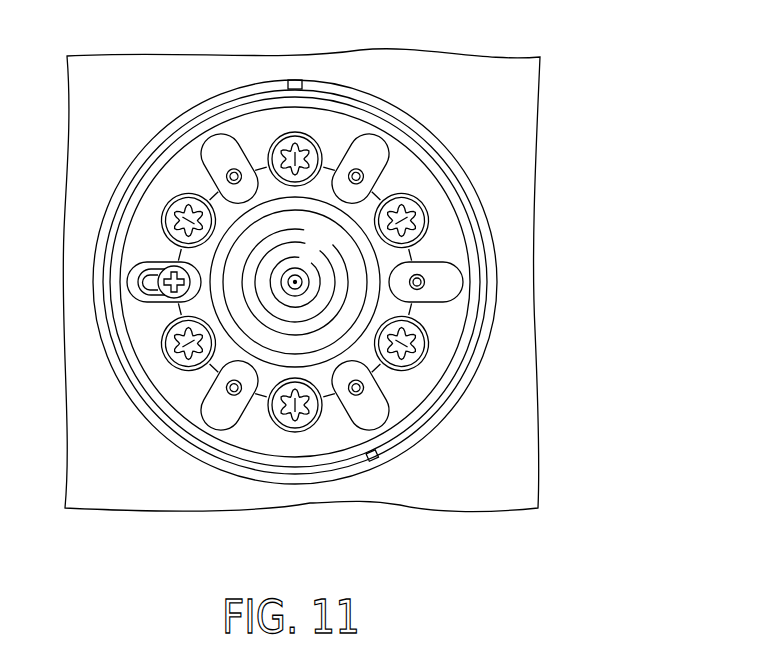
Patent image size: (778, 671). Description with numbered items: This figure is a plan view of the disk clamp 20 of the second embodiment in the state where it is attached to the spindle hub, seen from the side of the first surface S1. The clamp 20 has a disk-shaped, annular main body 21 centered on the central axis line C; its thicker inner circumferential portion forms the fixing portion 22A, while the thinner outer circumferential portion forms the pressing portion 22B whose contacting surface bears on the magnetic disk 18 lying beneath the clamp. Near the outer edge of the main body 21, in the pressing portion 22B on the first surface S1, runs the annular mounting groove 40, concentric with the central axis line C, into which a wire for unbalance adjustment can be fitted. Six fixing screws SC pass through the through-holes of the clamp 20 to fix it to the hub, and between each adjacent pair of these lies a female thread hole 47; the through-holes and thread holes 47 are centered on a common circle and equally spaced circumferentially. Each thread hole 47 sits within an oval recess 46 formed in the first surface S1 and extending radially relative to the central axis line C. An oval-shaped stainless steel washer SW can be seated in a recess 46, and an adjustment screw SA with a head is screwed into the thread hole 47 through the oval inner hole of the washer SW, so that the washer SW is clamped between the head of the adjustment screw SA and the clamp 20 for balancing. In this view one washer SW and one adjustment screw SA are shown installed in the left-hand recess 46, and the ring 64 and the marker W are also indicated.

The magnetic disk 18 is at (538, 109).
The clamp 20 is at (431, 131).
The main body 21 is at (348, 343).
The fixing portion 22A is at (390, 380).
The pressing portion 22B is at (453, 401).
The mounting groove 40 is at (474, 228).
The oval recess 46 is at (357, 152).
The female thread hole 47 is at (362, 173).
The hub ring 64 is at (355, 300).
The central axis line C is at (296, 280).
The fixing screw SC is at (308, 131).
The adjustment screw SA is at (172, 264).
The washer SW is at (132, 283).
The first surface S1 is at (175, 388).
The marker W is at (241, 96).